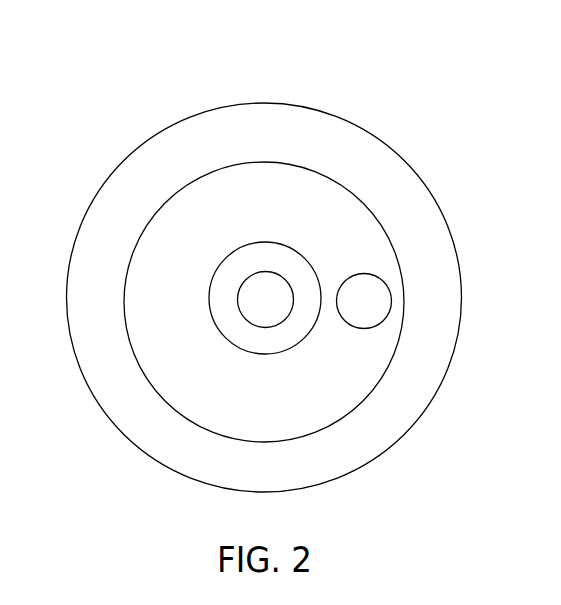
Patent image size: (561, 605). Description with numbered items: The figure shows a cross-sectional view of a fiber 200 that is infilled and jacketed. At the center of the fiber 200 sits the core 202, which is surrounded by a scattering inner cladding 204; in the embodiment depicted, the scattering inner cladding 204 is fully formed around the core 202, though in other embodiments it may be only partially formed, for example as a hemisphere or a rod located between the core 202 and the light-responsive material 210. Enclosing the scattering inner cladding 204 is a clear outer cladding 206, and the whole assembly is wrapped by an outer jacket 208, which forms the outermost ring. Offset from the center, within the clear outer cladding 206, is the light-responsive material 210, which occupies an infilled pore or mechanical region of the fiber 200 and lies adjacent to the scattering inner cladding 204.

The fiber 200 is at (445, 48).
The core 202 is at (268, 311).
The scattering inner cladding 204 is at (274, 255).
The clear outer cladding 206 is at (234, 183).
The outer jacket 208 is at (390, 182).
The light-responsive material 210 is at (370, 285).